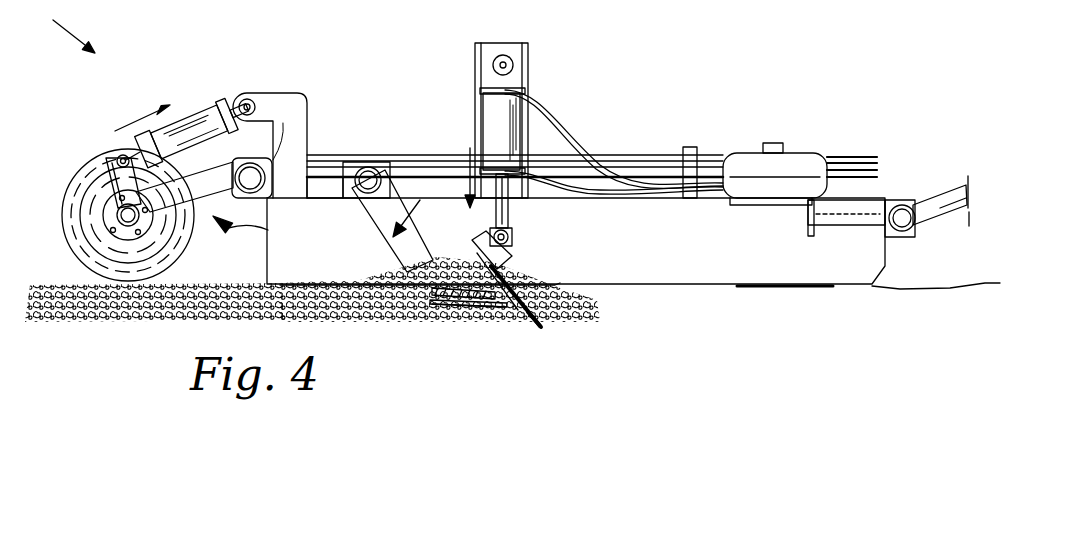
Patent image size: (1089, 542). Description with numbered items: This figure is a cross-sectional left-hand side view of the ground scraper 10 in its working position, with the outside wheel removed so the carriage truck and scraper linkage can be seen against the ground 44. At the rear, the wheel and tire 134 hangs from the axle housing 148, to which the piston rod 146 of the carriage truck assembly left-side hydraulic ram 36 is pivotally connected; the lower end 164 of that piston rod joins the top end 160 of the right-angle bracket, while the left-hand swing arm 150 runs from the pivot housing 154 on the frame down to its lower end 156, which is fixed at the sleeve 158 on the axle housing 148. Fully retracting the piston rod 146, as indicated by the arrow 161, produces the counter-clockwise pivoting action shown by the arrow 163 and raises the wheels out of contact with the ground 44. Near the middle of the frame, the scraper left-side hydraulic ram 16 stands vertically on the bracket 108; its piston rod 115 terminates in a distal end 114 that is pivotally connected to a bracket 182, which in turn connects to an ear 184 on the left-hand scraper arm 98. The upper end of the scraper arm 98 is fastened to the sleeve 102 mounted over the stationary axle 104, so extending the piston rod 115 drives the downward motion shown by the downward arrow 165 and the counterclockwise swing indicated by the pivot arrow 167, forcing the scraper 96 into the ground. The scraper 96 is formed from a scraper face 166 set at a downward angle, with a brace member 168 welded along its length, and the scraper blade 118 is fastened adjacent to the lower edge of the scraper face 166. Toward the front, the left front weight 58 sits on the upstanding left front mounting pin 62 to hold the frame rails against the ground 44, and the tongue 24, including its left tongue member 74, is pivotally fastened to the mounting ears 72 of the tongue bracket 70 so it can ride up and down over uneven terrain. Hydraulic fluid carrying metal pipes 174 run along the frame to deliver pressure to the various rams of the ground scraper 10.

The ground scraper 10 is at (60, 29).
The scraper left-side hydraulic ram 16 is at (492, 123).
The tongue 24 is at (946, 186).
The carriage truck assembly left-side hydraulic ram 36 is at (205, 118).
The ground 44 is at (760, 288).
The left front weight 58 is at (797, 163).
The left front mounting pin 62 is at (771, 142).
The tongue bracket 70 is at (897, 205).
The mounting ears 72 is at (895, 236).
The left tongue member 74 is at (930, 225).
The scraper 96 is at (477, 306).
The left-hand scraper arm 98 is at (365, 282).
The sleeve 102 is at (365, 166).
The stationary axle 104 is at (350, 176).
The bracket 108 is at (474, 62).
The distal end of piston rod 114 is at (494, 215).
The piston rod 115 is at (505, 180).
The scraper blade 118 is at (541, 327).
The wheel and tire 134 is at (62, 240).
The piston rod 146 is at (138, 150).
The axle housing 148 is at (95, 258).
The left-hand swing arm 150 is at (249, 99).
The pivot housing 154 is at (292, 165).
The lower end of swing arm 156 is at (204, 210).
The sleeve 158 is at (140, 228).
The top end of right-angle bracket 160 is at (80, 178).
The arrow 161 is at (163, 103).
The arrow 163 is at (303, 190).
The lower end of piston rod 164 is at (118, 158).
The downward arrow 165 is at (468, 173).
The scraper face 166 is at (520, 318).
The pivot arrow 167 is at (428, 172).
The brace member 168 is at (443, 305).
The hydraulic fluid carrying metal pipes 174 is at (875, 170).
The bracket 182 is at (516, 313).
The ear 184 is at (512, 240).